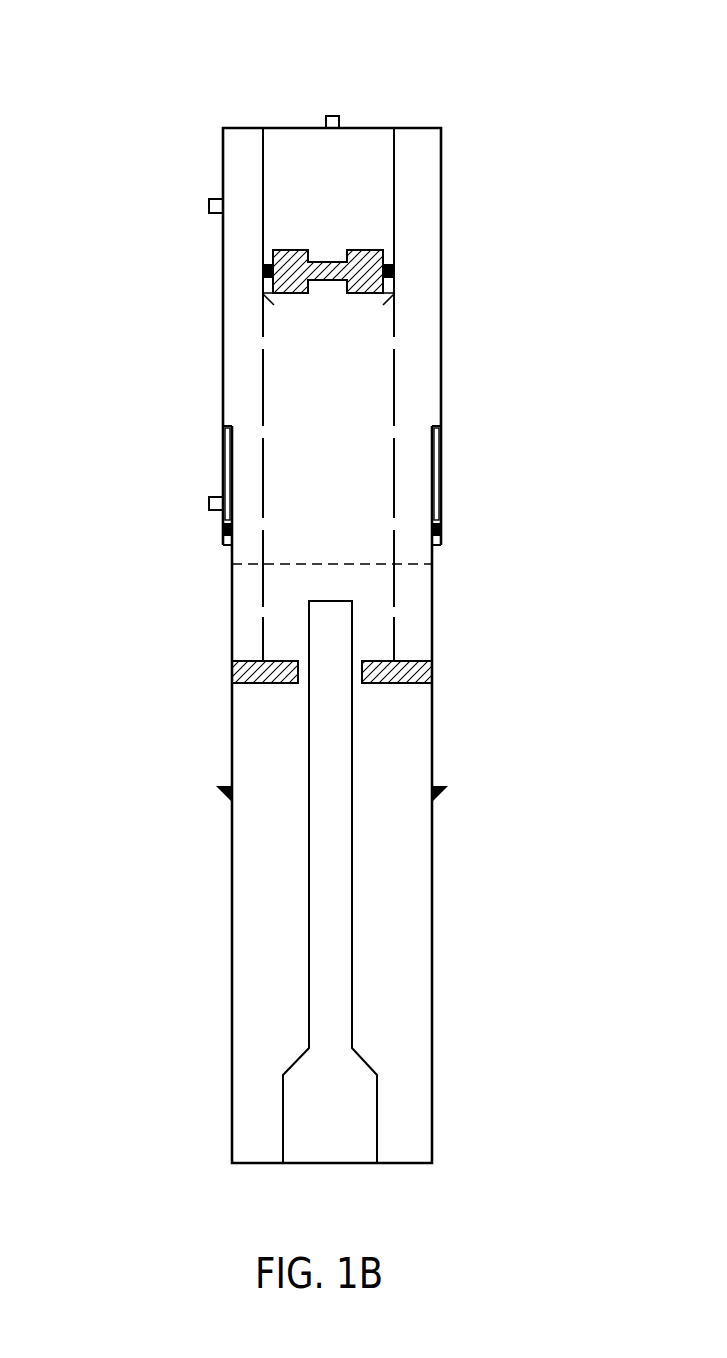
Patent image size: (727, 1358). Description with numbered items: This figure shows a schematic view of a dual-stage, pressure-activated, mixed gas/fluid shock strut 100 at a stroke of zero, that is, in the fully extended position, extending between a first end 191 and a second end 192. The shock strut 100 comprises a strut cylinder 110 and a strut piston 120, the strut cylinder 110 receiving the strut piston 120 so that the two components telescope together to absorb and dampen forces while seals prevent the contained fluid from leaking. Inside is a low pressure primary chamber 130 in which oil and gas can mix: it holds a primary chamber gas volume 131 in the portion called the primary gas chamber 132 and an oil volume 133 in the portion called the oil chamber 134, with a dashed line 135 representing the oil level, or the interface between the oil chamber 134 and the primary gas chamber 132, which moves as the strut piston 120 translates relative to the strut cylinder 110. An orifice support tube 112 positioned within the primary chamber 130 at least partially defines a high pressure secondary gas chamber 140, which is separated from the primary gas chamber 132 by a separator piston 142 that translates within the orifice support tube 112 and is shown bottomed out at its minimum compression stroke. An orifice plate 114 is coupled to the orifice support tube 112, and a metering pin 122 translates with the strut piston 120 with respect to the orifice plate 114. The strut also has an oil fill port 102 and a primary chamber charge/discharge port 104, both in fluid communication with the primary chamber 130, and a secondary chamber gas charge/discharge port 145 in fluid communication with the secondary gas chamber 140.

The shock strut 100 is at (122, 92).
The oil fill port 102 is at (209, 503).
The primary chamber charge/discharge port 104 is at (209, 205).
The strut cylinder 110 is at (222, 332).
The orifice support tube 112 is at (396, 209).
The orifice plate 114 is at (417, 667).
The strut piston 120 is at (232, 943).
The metering pin 122 is at (310, 884).
The primary chamber 130 is at (417, 473).
The primary chamber gas volume 131 is at (248, 412).
The primary gas chamber 132 is at (425, 333).
The oil volume 133 is at (250, 738).
The oil chamber 134 is at (407, 737).
The dashed line 135 is at (357, 567).
The secondary gas chamber 140 is at (362, 178).
The separator piston 142 is at (373, 260).
The secondary chamber gas charge/discharge port 145 is at (325, 125).
The first end 191 is at (252, 1192).
The second end 192 is at (406, 90).